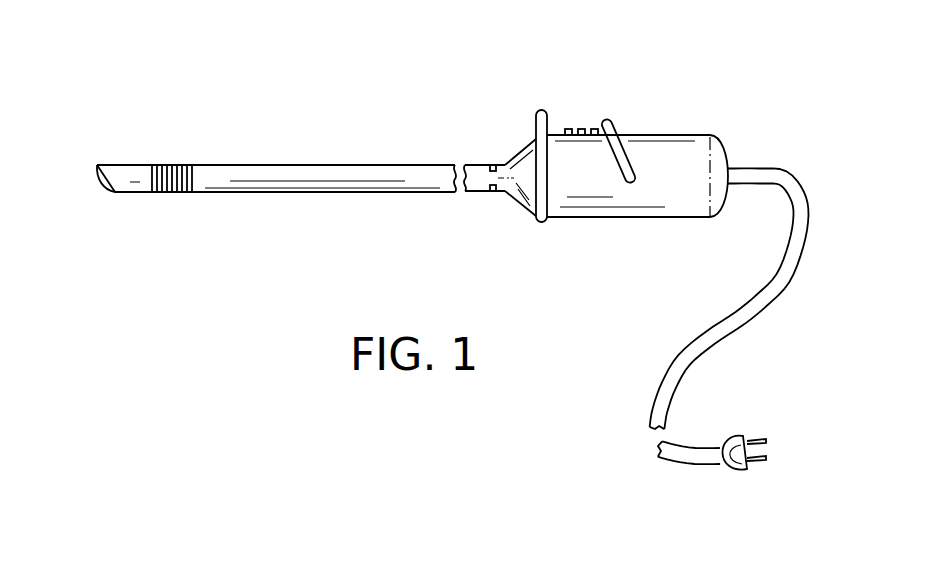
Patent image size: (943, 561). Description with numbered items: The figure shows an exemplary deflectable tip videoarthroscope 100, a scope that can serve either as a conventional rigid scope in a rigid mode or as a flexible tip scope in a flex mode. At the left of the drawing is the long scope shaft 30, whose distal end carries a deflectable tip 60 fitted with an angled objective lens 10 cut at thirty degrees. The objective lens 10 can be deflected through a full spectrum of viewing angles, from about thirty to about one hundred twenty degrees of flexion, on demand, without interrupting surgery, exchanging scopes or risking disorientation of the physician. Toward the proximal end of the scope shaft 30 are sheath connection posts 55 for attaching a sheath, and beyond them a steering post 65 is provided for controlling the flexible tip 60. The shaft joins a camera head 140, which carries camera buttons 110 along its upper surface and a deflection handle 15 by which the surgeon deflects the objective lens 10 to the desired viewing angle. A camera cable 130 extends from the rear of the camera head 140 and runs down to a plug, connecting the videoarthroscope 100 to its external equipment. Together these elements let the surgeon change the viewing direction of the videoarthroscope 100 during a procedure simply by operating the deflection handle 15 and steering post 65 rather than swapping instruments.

The deflectable tip videoarthroscope 100 is at (688, 50).
The objective lens 10 is at (86, 181).
The scope shaft 30 is at (356, 173).
The deflectable tip 60 is at (175, 175).
The sheath connection posts 55 is at (493, 165).
The steering post 65 is at (538, 132).
The camera head 140 is at (668, 153).
The camera buttons 110 is at (594, 129).
The deflection handle 15 is at (617, 125).
The camera cable 130 is at (745, 172).